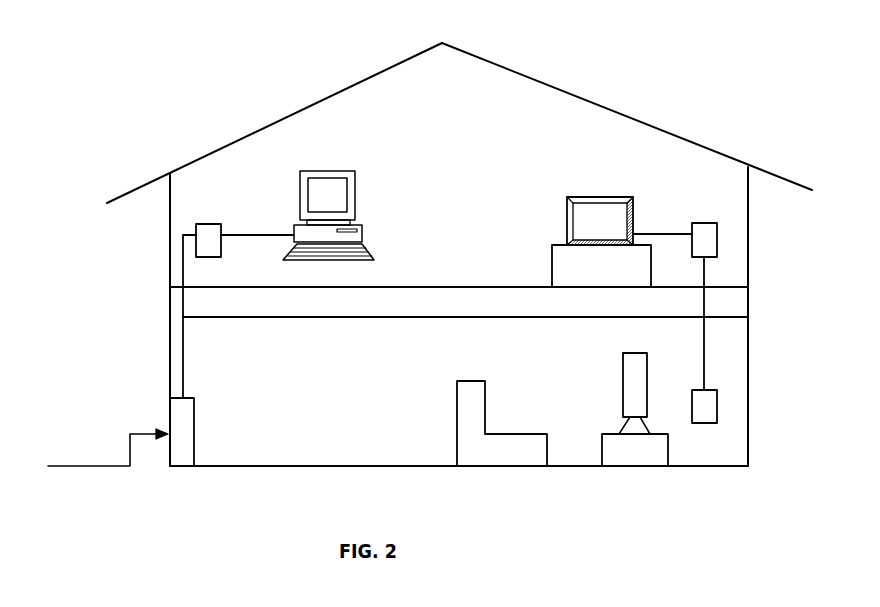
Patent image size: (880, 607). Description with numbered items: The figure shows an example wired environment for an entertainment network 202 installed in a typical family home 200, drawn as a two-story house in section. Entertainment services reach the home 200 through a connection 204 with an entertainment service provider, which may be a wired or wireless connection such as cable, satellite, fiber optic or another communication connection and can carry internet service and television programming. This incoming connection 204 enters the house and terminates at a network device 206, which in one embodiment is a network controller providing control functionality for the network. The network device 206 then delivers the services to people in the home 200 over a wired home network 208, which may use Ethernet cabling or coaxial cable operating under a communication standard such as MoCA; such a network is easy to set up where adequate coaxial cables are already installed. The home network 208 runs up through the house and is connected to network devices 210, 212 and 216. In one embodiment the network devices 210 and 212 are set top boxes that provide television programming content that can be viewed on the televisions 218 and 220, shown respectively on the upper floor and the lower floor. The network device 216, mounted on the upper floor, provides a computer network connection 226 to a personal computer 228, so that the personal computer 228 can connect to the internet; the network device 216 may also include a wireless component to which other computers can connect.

The family home 200 is at (586, 50).
The entertainment network 202 is at (404, 128).
The connection 204 is at (102, 466).
The network device 206 is at (180, 466).
The wired home network 208 is at (183, 353).
The network device 210 is at (708, 222).
The network device 212 is at (703, 423).
The network device 216 is at (208, 214).
The television 218 is at (598, 196).
The television 220 is at (623, 352).
The computer network connection 226 is at (233, 230).
The personal computer 228 is at (363, 232).